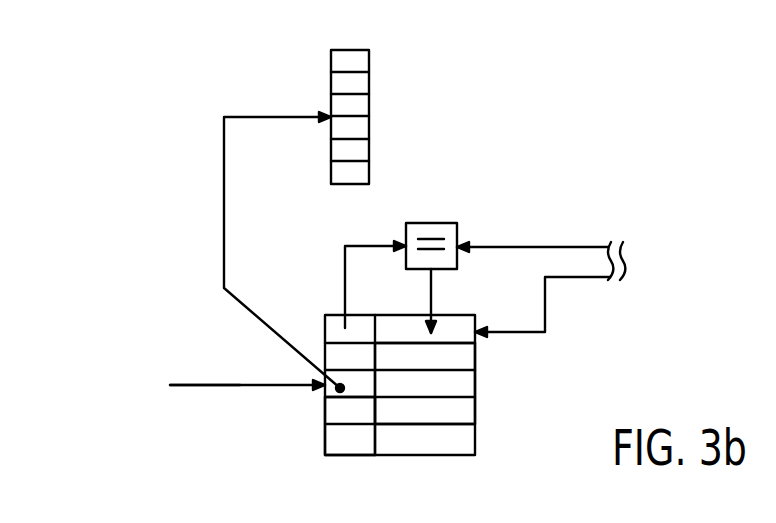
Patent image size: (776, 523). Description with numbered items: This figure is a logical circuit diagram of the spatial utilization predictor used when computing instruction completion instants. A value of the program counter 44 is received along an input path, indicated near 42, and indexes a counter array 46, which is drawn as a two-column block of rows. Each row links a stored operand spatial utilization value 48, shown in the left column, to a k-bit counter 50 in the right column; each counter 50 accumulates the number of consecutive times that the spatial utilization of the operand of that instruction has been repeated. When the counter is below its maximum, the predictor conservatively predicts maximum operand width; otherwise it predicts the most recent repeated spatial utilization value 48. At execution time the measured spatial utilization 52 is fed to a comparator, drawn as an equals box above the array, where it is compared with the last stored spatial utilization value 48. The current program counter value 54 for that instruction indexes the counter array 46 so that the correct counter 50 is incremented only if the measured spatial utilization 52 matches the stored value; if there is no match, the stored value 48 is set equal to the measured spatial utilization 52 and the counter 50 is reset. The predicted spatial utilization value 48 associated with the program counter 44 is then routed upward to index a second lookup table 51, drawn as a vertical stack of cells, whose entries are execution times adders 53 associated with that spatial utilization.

The input data signal 42 is at (136, 378).
The program counter 44 is at (208, 387).
The counter array 46 is at (604, 155).
The operand spatial utilization value 48 is at (333, 437).
The k-bit counter 50 is at (465, 357).
The second lookup table 51 is at (480, 92).
The measured spatial utilization 52 is at (537, 247).
The execution times adders 53 is at (369, 62).
The current program counter value 54 is at (577, 277).